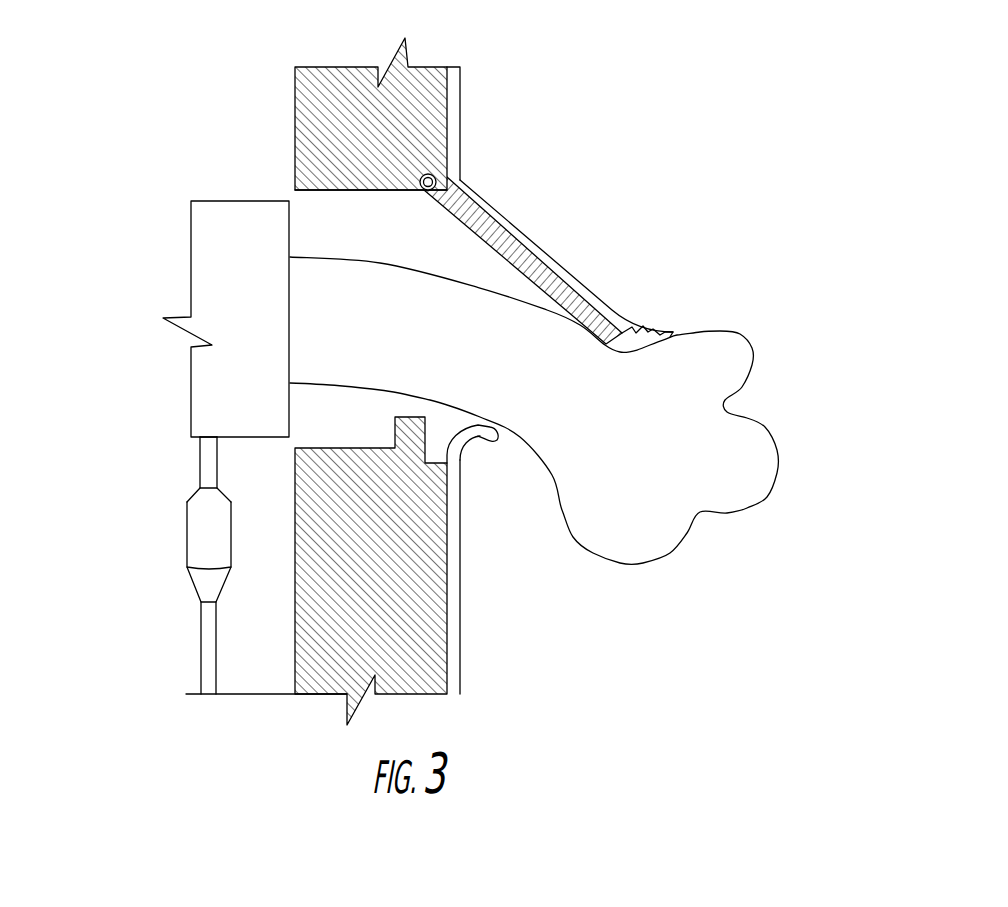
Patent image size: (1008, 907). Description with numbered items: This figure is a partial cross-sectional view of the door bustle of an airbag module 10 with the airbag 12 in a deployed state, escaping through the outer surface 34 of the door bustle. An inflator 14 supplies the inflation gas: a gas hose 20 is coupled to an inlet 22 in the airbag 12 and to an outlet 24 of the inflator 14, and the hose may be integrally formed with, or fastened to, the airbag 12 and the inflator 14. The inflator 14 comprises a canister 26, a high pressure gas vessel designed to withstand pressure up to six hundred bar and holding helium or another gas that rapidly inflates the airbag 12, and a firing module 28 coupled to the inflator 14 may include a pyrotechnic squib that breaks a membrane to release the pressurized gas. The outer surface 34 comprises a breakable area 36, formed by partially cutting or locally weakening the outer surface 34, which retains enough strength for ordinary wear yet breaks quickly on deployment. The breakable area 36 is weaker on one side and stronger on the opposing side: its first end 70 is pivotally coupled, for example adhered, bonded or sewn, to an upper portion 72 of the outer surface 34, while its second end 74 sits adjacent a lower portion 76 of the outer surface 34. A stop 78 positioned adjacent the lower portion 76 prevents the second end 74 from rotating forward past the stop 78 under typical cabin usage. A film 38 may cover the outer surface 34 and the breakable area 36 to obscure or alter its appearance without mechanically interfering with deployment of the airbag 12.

The airbag module 10 is at (203, 260).
The airbag 12 is at (685, 465).
The inflator 14 is at (197, 518).
The gas hose 20 is at (200, 473).
The inlet 22 is at (210, 437).
The outlet 24 is at (197, 488).
The canister 26 is at (195, 555).
The firing module 28 is at (207, 638).
The outer surface 34 is at (438, 88).
The breakable area 36 is at (527, 243).
The film 38 is at (580, 277).
The first end 70 is at (440, 180).
The upper portion 72 is at (380, 190).
The second end 74 is at (603, 320).
The lower portion 76 is at (420, 520).
The stop 78 is at (413, 437).